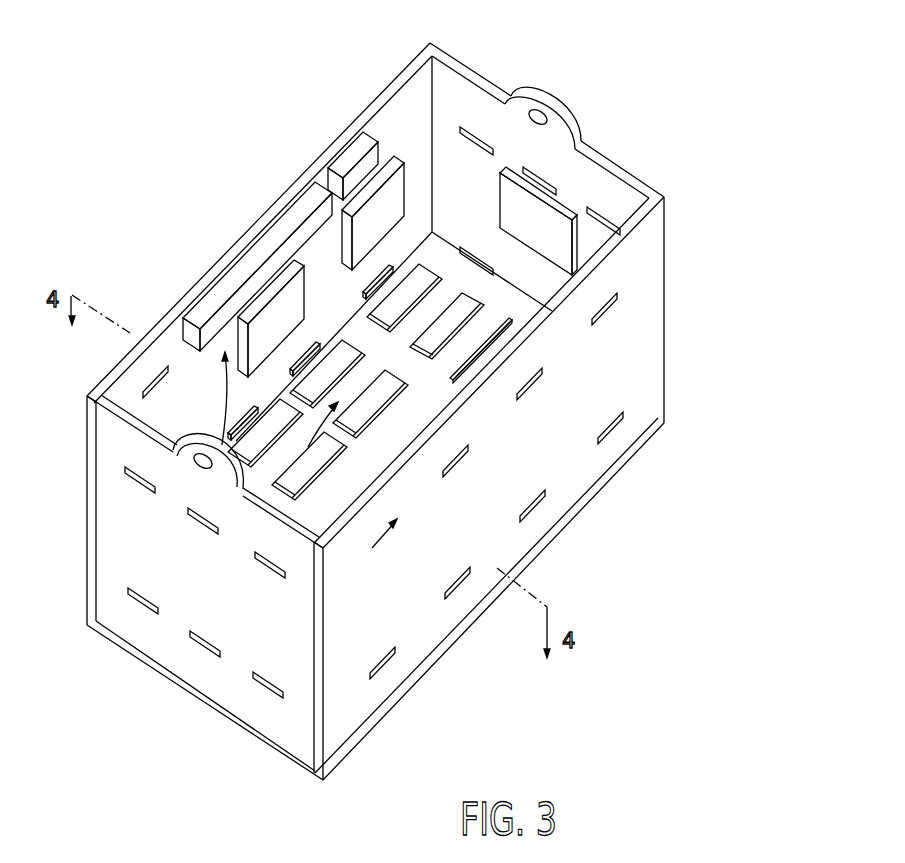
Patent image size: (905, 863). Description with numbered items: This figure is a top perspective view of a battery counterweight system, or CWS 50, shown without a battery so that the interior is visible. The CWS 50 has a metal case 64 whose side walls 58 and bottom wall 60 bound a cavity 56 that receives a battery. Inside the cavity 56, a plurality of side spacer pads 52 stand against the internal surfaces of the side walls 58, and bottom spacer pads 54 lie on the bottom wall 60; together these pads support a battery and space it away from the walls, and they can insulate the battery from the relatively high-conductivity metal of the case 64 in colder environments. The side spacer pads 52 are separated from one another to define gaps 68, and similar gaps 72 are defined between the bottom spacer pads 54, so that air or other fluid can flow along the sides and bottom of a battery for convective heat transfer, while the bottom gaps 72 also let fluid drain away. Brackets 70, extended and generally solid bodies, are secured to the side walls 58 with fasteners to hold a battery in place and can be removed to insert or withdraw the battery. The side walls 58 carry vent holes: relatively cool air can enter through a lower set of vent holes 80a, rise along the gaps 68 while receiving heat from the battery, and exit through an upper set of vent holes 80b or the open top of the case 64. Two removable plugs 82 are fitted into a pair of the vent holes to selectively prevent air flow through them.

The CWS 50 is at (401, 411).
The side spacer pads 52 is at (546, 192).
The bottom spacer pads 54 is at (383, 523).
The cavity 56 is at (641, 187).
The side walls 58 is at (606, 162).
The bottom wall 60 is at (404, 414).
The case 64 is at (328, 132).
The gaps 68 is at (323, 257).
The brackets 70 is at (224, 280).
The gaps 72 is at (290, 483).
The vent holes 80a is at (540, 509).
The vent holes 80b is at (140, 488).
The plugs 82 is at (607, 432).